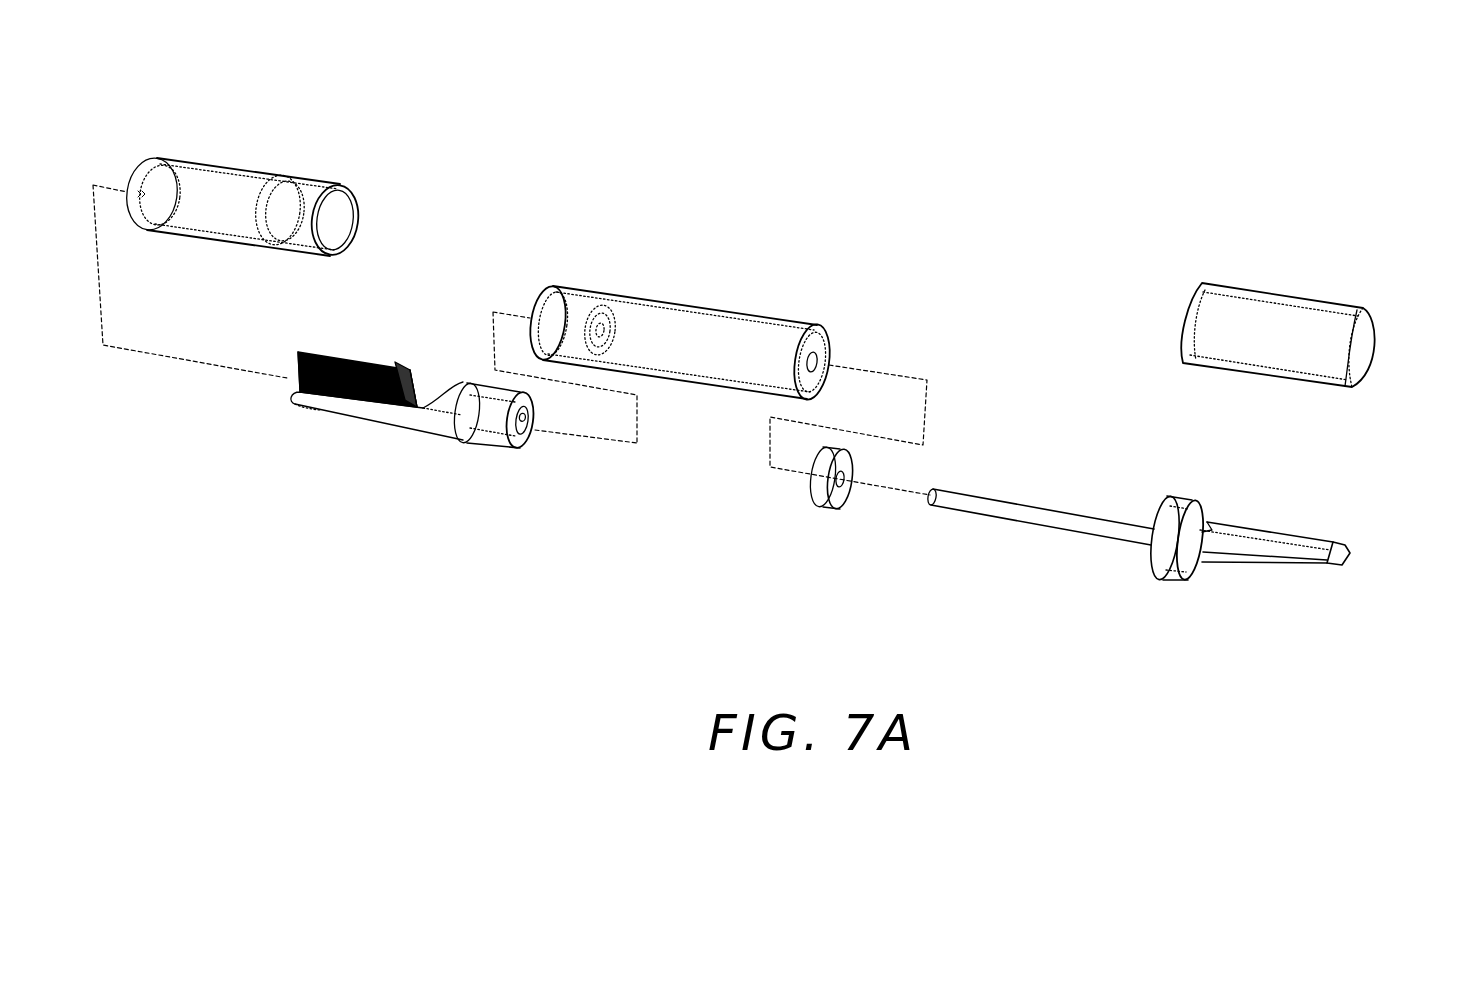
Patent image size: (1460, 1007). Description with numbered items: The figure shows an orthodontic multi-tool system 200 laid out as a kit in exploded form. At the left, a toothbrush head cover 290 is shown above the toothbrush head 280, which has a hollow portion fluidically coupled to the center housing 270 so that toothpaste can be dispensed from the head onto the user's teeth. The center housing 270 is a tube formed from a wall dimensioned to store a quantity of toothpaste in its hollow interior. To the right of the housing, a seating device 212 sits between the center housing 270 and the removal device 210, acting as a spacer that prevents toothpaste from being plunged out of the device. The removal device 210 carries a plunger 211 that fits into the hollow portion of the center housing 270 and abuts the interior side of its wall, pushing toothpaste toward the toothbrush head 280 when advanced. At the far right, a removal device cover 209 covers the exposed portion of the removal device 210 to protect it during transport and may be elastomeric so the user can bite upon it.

The system 200 is at (619, 158).
The removal device cover 209 is at (1397, 374).
The removal device 210 is at (1233, 596).
The plunger 211 is at (1010, 549).
The seating device 212 is at (857, 510).
The center housing 270 is at (680, 409).
The toothbrush head 280 is at (373, 463).
The toothbrush head cover 290 is at (297, 134).